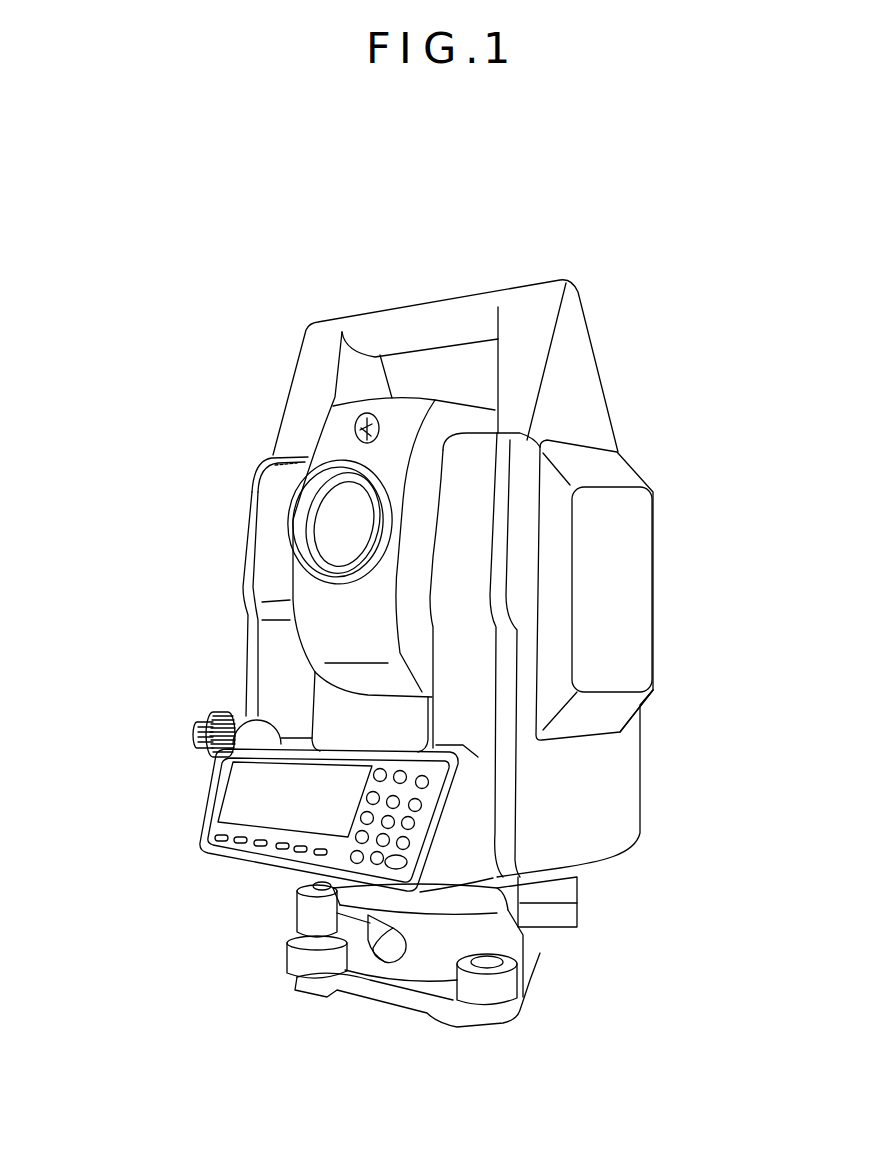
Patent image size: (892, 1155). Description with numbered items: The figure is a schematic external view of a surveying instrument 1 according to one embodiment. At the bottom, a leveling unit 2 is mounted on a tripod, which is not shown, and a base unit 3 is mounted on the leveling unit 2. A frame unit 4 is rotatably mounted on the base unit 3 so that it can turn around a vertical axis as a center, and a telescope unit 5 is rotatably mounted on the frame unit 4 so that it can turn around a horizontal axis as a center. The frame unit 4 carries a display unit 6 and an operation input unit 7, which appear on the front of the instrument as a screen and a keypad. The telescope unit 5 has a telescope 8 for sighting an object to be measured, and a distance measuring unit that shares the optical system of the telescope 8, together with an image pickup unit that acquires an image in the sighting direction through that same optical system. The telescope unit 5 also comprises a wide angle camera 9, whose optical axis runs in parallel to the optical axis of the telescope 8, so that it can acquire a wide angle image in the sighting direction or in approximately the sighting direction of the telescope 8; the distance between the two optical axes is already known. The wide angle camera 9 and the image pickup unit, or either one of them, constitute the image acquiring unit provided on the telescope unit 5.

The surveying instrument 1 is at (147, 303).
The leveling unit 2 is at (293, 983).
The base unit 3 is at (573, 927).
The frame unit 4 is at (633, 470).
The telescope unit 5 is at (317, 634).
The display unit 6 is at (277, 792).
The operation input unit 7 is at (260, 853).
The telescope 8 is at (337, 515).
The wide angle camera 9 is at (357, 418).